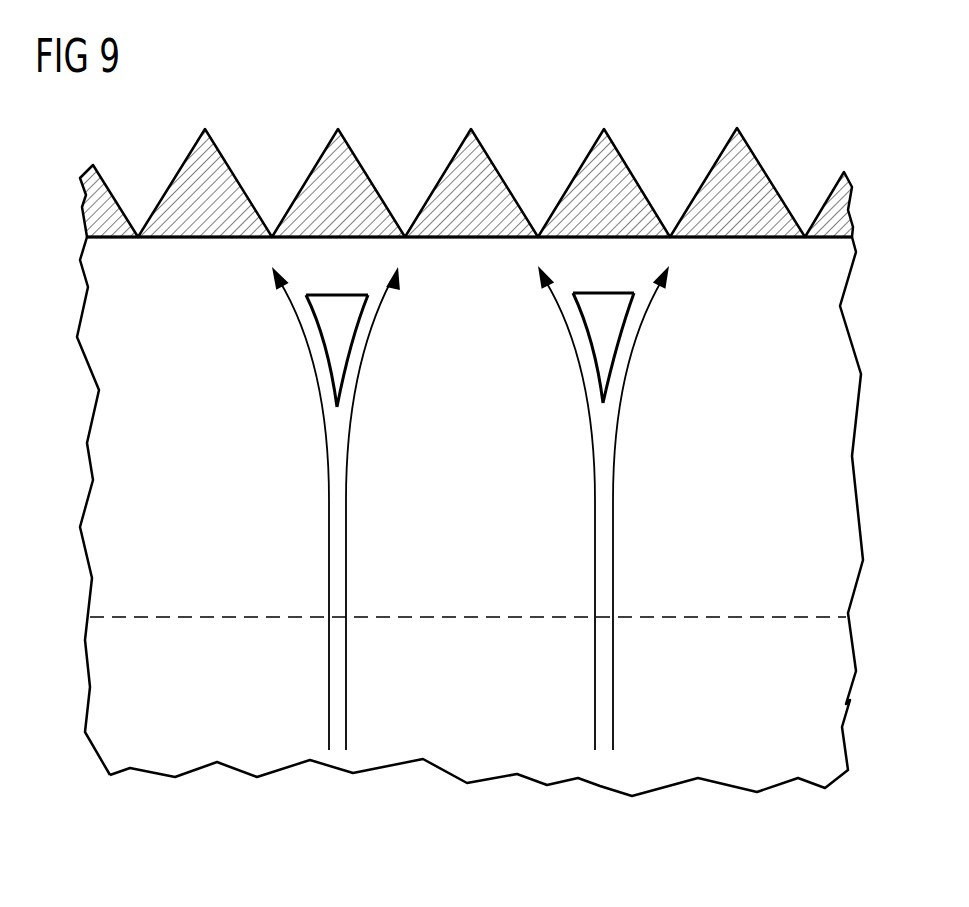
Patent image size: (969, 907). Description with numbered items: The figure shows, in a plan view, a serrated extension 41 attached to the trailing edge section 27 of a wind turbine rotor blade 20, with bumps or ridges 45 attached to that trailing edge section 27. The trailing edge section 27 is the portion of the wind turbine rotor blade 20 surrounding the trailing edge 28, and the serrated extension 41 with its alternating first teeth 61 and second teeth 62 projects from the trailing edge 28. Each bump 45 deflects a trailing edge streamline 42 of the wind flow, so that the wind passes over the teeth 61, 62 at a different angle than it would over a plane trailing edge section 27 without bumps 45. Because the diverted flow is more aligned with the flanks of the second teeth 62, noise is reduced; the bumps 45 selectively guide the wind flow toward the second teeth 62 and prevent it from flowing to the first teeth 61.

The wind turbine rotor blade 20 is at (98, 676).
The trailing edge section 27 is at (98, 505).
The trailing edge 28 is at (118, 240).
The serrated extension 41 is at (466, 176).
The trailing edge streamline 42 is at (329, 545).
The bumps 45 is at (337, 305).
The first teeth 61 is at (103, 202).
The second teeth 62 is at (188, 165).